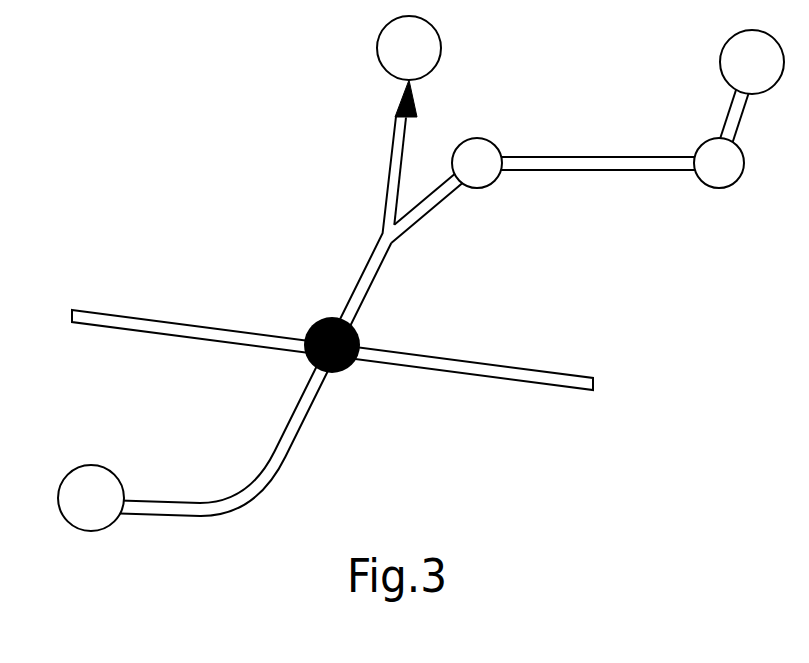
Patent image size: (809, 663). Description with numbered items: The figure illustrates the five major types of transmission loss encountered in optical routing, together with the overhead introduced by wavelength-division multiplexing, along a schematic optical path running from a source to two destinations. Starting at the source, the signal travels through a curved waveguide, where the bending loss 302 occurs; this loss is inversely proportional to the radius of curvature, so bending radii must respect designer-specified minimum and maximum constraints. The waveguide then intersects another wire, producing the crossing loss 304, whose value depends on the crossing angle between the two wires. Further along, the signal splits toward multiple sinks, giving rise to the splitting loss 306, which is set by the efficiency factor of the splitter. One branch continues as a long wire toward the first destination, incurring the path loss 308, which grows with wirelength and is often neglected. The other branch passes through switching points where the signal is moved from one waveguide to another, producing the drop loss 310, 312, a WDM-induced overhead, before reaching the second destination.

The bending loss 302 is at (260, 510).
The crossing loss 304 is at (313, 315).
The splitting loss 306 is at (407, 232).
The path loss 308 is at (387, 162).
The drop loss 310 is at (490, 135).
The drop loss 312 is at (707, 138).